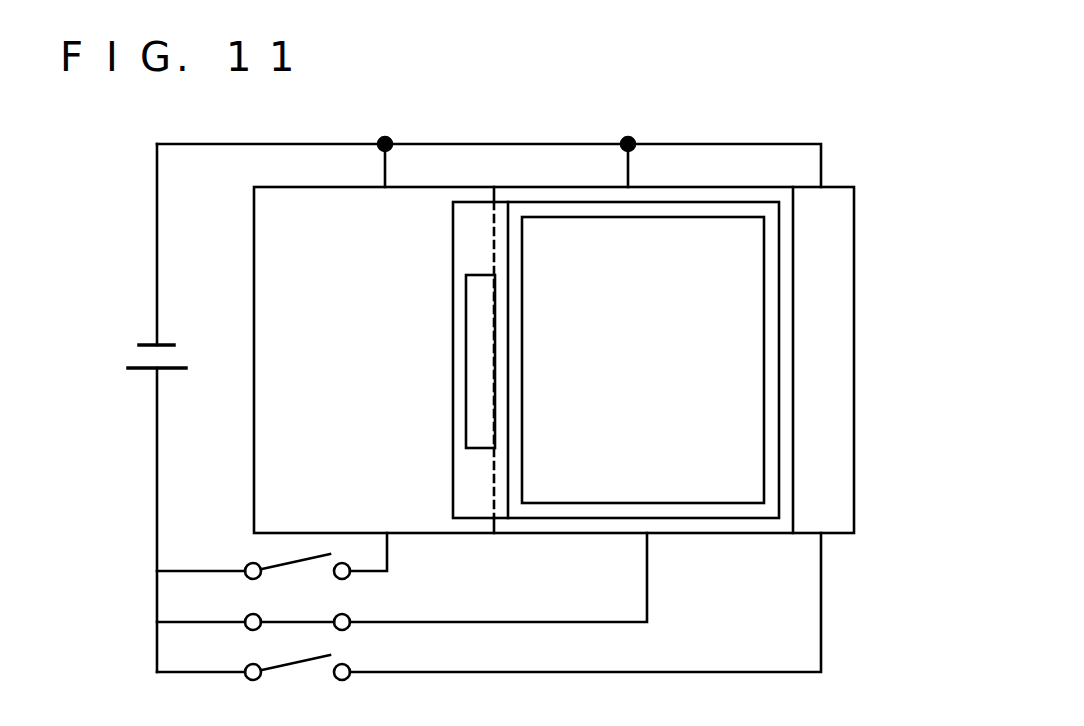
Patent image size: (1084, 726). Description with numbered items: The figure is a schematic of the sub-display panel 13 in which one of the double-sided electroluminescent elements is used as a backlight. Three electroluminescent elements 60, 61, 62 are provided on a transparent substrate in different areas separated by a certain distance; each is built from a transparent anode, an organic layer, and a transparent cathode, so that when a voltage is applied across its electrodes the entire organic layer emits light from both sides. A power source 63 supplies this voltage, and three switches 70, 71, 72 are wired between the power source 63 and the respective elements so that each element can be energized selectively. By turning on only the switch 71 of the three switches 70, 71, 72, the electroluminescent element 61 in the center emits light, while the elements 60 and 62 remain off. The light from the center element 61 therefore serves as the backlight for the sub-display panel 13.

The sub-display panel 13 is at (748, 338).
The electroluminescent element 60 is at (833, 237).
The electroluminescent element 61 is at (683, 233).
The electroluminescent element 62 is at (428, 222).
The power source 63 is at (142, 377).
The switch 70 is at (276, 666).
The switch 71 is at (276, 616).
The switch 72 is at (276, 563).